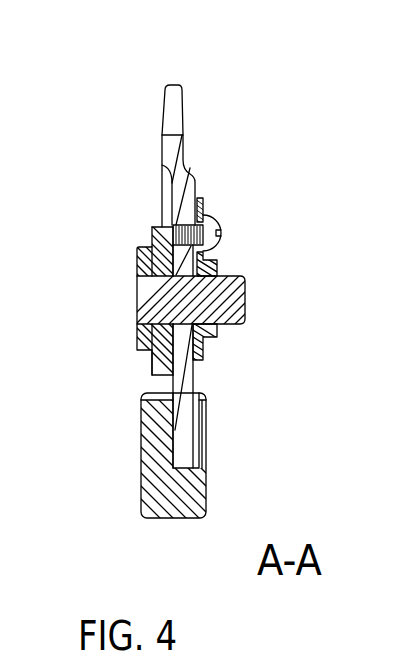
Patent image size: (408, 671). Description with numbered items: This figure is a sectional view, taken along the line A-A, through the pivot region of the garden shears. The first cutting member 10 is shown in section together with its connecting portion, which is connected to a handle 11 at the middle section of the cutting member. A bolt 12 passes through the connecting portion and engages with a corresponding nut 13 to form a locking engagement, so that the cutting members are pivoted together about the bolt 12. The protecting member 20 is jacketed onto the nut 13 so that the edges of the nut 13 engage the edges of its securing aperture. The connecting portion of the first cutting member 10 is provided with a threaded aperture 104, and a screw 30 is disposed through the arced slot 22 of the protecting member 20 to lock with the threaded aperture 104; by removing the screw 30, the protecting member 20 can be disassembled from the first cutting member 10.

The first cutting member 10 is at (165, 84).
The threaded aperture 104 is at (172, 222).
The handle 11 is at (141, 461).
The bolt 12 is at (137, 298).
The nut 13 is at (217, 330).
The protecting member 20 is at (190, 350).
The arced slot 22 is at (203, 218).
The screw 30 is at (224, 226).